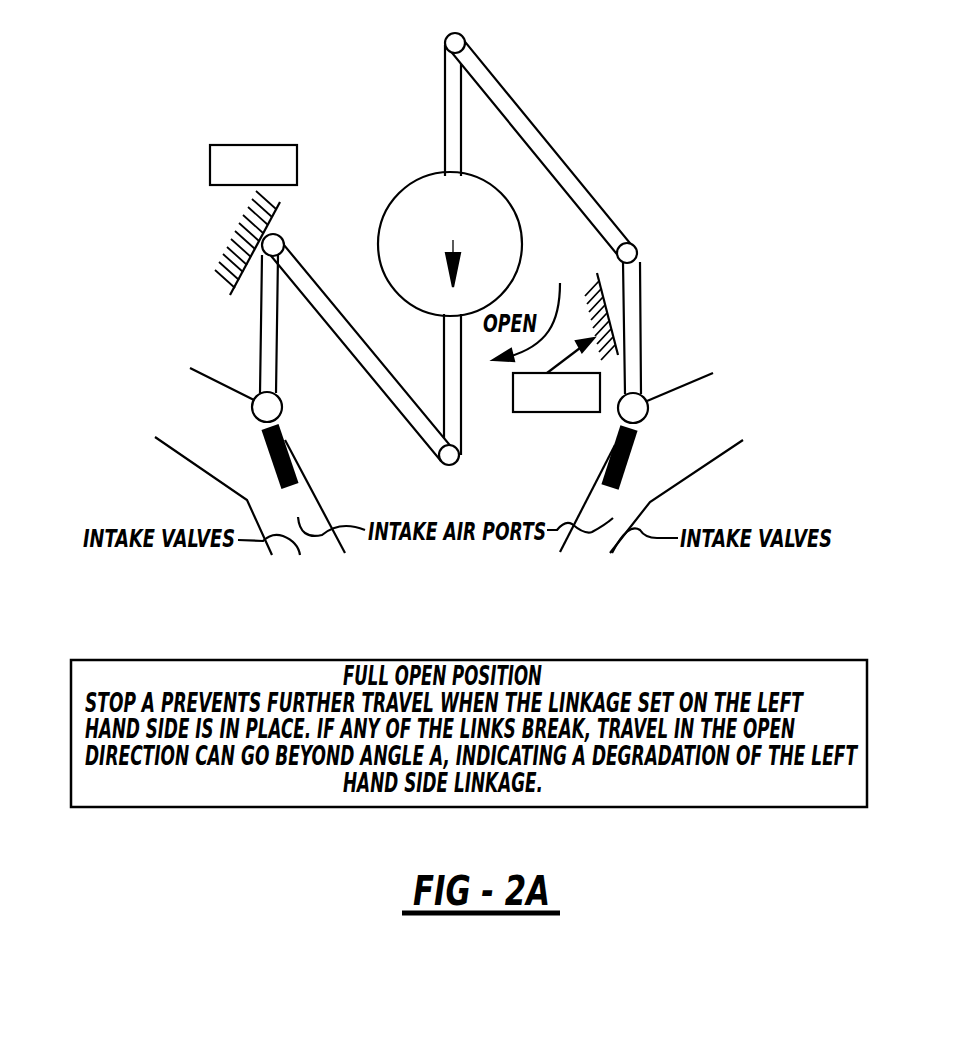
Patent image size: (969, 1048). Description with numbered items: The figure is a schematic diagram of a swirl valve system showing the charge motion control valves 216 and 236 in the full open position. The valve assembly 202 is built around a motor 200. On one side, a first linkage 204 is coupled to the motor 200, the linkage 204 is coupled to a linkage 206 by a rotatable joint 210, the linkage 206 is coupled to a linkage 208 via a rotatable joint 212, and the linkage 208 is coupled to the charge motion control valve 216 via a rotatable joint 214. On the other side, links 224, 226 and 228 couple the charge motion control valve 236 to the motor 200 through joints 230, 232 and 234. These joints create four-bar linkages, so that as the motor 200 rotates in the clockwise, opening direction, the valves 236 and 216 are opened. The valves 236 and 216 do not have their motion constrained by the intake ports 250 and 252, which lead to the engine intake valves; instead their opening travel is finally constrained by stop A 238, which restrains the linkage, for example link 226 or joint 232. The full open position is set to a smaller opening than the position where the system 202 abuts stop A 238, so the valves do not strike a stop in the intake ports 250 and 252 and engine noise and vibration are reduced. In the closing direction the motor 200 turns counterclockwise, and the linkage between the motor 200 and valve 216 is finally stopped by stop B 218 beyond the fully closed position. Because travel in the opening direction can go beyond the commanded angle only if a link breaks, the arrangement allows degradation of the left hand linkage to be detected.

The motor 200 is at (409, 185).
The valve assembly 202 is at (584, 148).
The first linkage 204 is at (445, 98).
The linkage 206 is at (546, 142).
The linkage 208 is at (641, 332).
The rotatable joint 210 is at (465, 43).
The rotatable joint 212 is at (637, 251).
The rotatable joint 214 is at (645, 400).
The charge motion control valve 216 is at (630, 458).
The stop B 218 is at (555, 412).
The link 224 is at (443, 375).
The link 226 is at (322, 288).
The link 228 is at (278, 352).
The joint 230 is at (449, 466).
The joint 232 is at (284, 238).
The joint 234 is at (256, 394).
The charge motion control valve 236 is at (289, 452).
The stop A 238 is at (248, 145).
The intake port 250 is at (203, 472).
The intake port 252 is at (692, 476).